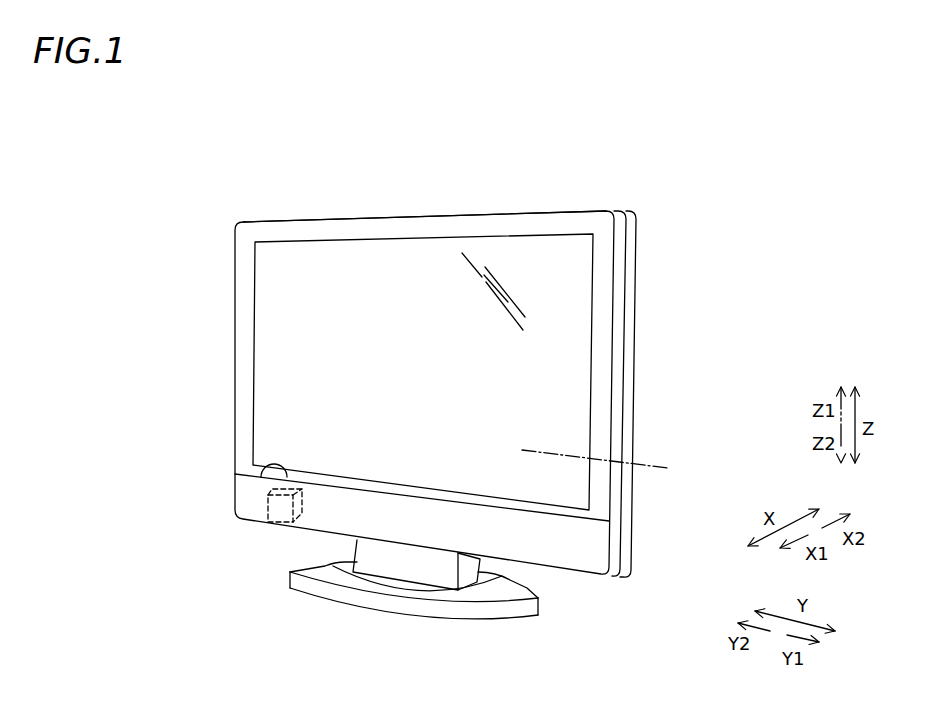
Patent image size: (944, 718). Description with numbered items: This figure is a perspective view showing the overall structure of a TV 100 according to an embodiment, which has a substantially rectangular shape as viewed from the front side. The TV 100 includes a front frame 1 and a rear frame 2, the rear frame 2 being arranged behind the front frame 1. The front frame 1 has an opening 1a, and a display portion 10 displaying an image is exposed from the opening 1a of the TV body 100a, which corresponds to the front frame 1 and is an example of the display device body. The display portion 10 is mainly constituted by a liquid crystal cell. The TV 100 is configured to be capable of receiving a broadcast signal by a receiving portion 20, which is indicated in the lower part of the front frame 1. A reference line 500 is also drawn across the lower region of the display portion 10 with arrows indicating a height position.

The TV 100 is at (426, 196).
The TV body 100a is at (510, 212).
The front frame 1 is at (602, 220).
The rear frame 2 is at (633, 233).
The display portion 10 is at (290, 262).
The opening 1a is at (266, 463).
The receiving portion 20 is at (278, 522).
The reference height line 500 is at (528, 454).